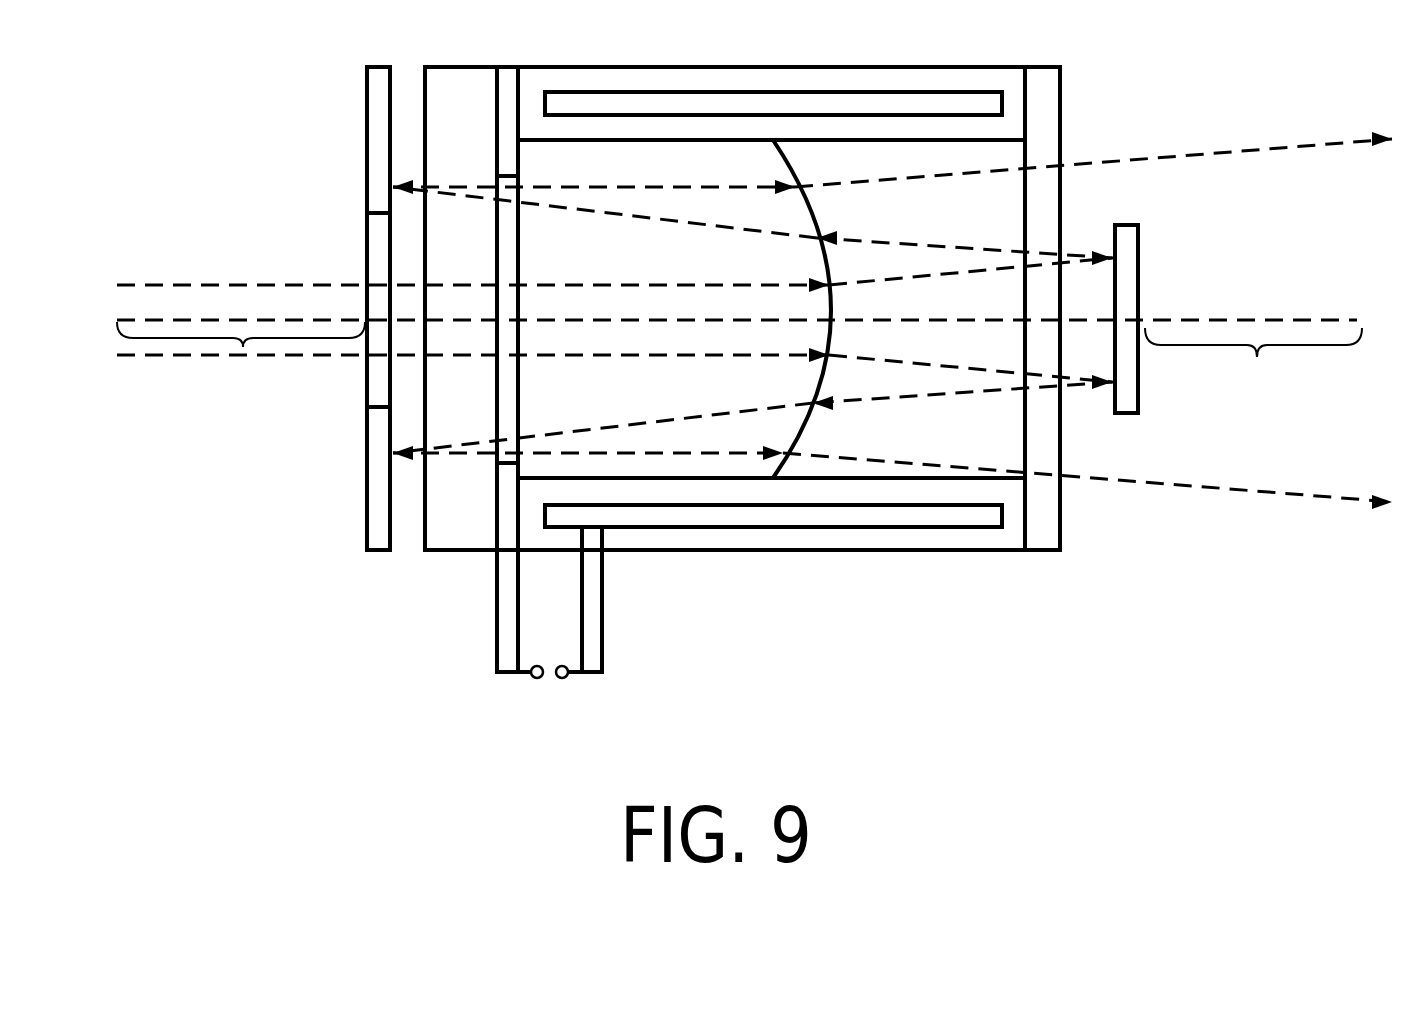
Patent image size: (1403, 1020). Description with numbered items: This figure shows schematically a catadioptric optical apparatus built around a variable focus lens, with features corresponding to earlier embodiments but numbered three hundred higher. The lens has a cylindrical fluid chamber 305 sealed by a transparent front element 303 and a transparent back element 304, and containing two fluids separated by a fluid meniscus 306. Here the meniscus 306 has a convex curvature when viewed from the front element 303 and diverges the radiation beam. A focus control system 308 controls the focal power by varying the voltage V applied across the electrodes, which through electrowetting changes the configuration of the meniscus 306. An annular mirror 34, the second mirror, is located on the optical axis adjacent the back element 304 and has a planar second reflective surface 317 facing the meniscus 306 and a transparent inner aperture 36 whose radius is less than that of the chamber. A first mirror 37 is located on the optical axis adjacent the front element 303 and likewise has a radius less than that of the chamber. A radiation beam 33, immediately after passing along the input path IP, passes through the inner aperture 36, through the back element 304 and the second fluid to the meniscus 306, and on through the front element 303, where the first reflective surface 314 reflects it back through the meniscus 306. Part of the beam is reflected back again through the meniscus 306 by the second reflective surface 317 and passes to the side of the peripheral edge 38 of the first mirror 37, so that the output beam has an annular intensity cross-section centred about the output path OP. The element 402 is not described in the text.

The radiation beam 33 is at (153, 357).
The annular mirror 34 is at (378, 497).
The inner aperture 36 is at (378, 242).
The first mirror 37 is at (1125, 242).
The peripheral edge 38 is at (1127, 407).
The front element 303 is at (1040, 535).
The back element 304 is at (457, 535).
The fluid chamber 305 is at (922, 440).
The fluid meniscus 306 is at (788, 168).
The focus control system 308 is at (590, 662).
The first reflective surface 314 is at (1117, 295).
The second reflective surface 317 is at (388, 535).
The heater/electrode strips 402 is at (668, 513).
The input path IP is at (243, 350).
The output path OP is at (1253, 364).
The voltage V is at (549, 694).